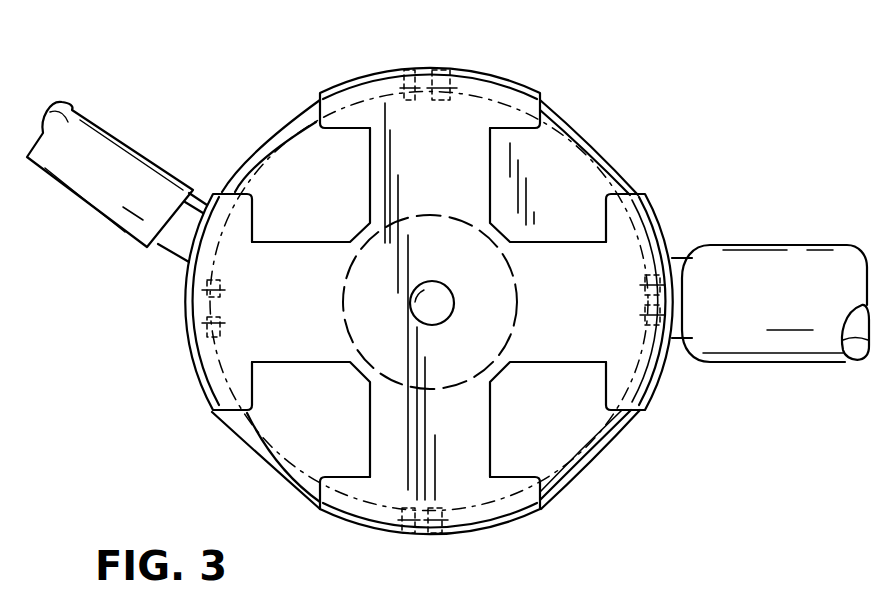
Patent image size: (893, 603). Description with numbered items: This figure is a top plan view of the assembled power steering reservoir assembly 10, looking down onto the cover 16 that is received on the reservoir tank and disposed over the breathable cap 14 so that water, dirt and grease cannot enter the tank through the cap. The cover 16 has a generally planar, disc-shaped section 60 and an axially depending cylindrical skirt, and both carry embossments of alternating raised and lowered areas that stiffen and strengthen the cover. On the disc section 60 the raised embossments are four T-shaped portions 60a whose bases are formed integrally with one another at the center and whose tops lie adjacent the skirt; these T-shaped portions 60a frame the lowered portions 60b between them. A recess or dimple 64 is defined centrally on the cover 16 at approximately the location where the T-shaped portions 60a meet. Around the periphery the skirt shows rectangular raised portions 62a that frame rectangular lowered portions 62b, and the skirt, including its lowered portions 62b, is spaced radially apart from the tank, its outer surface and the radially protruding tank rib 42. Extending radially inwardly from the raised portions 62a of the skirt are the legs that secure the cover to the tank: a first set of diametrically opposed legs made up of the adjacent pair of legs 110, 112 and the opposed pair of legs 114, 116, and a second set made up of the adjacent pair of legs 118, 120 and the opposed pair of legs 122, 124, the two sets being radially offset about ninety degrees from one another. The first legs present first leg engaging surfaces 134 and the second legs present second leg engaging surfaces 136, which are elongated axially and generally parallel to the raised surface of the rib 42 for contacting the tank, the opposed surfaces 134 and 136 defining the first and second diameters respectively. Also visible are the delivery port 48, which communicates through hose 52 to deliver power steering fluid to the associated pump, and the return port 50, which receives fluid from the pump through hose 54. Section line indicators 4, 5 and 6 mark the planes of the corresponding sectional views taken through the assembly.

The reservoir assembly 10 is at (686, 75).
The breathable cap 14 is at (340, 308).
The cover 16 is at (638, 160).
The tank rib 42 is at (227, 396).
The delivery port 48 is at (677, 258).
The return port 50 is at (165, 247).
The hose 52 is at (795, 352).
The hose 54 is at (67, 180).
The disc section 60 is at (548, 152).
The T-shaped raised portions 60a is at (387, 177).
The lowered portions 60b is at (291, 136).
The rectangular-shaped raised portions 62a is at (495, 72).
The rectangular-shaped lowered portions 62b is at (563, 116).
The dimple 64 is at (513, 283).
The first leg 110 is at (398, 75).
The first leg 112 is at (454, 69).
The first leg 114 is at (405, 500).
The first leg 116 is at (455, 527).
The second leg 118 is at (178, 290).
The second leg 120 is at (190, 331).
The second leg 122 is at (678, 280).
The second leg 124 is at (656, 336).
The first leg engaging surfaces 134 is at (450, 100).
The second leg engaging surfaces 136 is at (228, 316).
The section line 4- 4 is at (253, 127).
The section line 5- 5 is at (162, 304).
The section line 6- 6 is at (390, 37).